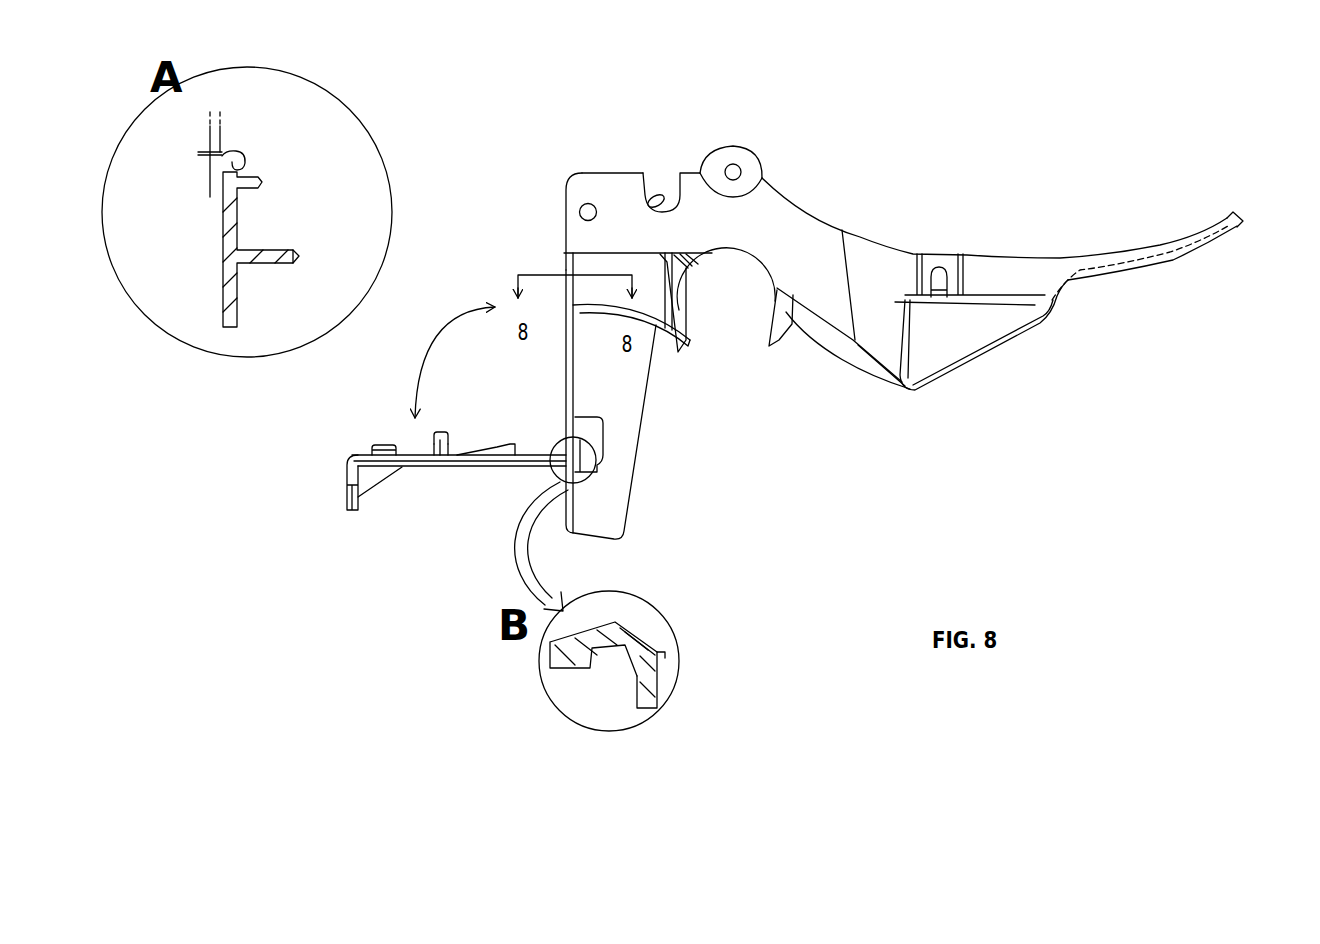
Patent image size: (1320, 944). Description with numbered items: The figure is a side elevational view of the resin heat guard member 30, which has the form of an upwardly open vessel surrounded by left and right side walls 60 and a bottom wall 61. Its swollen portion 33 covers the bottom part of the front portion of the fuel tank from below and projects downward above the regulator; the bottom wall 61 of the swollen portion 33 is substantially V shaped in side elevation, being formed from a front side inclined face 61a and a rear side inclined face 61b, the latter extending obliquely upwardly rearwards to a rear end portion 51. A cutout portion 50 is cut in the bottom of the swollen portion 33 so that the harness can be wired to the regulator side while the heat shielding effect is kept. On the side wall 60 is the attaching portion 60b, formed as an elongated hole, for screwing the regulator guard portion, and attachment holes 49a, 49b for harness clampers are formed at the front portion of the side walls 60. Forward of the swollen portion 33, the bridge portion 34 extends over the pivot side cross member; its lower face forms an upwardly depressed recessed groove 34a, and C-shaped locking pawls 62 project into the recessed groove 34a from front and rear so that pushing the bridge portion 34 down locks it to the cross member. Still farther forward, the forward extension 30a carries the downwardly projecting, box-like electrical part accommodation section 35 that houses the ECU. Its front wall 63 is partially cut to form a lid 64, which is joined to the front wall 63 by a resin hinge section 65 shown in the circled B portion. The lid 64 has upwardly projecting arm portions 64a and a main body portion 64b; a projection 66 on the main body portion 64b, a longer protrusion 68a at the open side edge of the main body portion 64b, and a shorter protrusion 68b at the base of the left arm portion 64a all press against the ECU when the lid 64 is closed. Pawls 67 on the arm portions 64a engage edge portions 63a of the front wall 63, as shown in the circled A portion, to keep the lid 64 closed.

The heat guard member 30 is at (1053, 247).
The forward extension 30a is at (640, 245).
The swollen portion 33 is at (877, 340).
The bridge portion 34 is at (750, 243).
The recessed groove 34a is at (722, 250).
The electrical part accommodation section 35 is at (637, 468).
The attachment hole 49a is at (588, 205).
The attachment hole 49b is at (733, 164).
The cutout portion 50 is at (848, 273).
The rear end portion 51 is at (1247, 216).
The side wall 60 is at (1013, 265).
The attaching portion 60b is at (939, 267).
The bottom wall 61 is at (878, 470).
The front side inclined face 61a is at (865, 385).
The rear side inclined face 61b is at (953, 362).
The locking pawl 62 is at (680, 354).
The front wall 63 is at (578, 496).
The edge portion 63a is at (215, 156).
The lid 64 is at (346, 453).
The arm portion 64a is at (397, 467).
The main body portion 64b is at (535, 455).
The resin hinge section 65 is at (620, 650).
The projection 66 is at (503, 453).
The pawl 67 is at (387, 445).
The protrusion 68a is at (440, 432).
The protrusion 68b is at (447, 452).